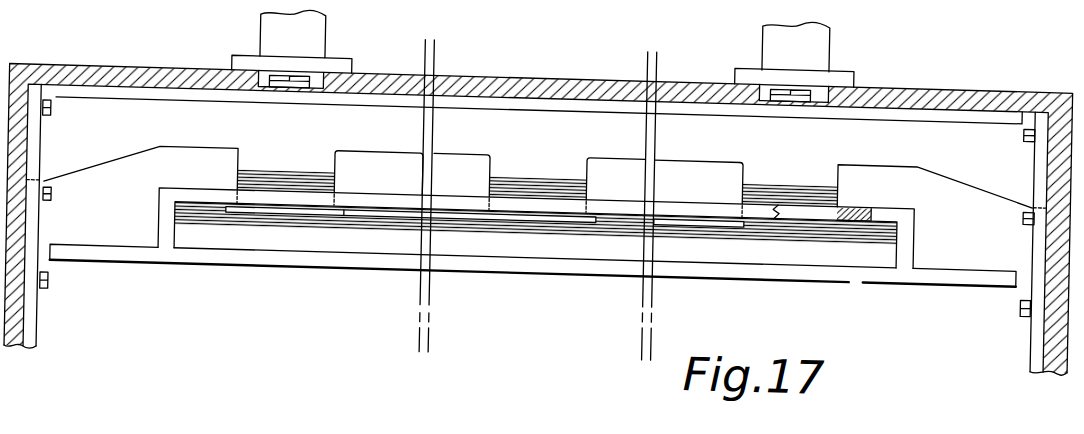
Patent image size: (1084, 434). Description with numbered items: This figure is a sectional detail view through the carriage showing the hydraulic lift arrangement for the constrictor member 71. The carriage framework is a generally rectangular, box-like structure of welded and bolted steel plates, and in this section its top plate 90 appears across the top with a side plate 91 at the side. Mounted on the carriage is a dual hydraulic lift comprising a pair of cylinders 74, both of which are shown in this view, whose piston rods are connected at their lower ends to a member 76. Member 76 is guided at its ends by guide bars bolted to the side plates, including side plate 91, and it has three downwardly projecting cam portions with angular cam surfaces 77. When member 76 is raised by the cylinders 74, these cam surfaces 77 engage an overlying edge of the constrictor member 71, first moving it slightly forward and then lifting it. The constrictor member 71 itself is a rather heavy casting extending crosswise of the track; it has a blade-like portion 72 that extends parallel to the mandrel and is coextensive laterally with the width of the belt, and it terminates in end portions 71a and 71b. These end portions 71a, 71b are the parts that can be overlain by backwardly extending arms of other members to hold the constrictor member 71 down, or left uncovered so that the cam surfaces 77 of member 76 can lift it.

The top plate 90 is at (504, 66).
The side plate 91 is at (1054, 315).
The cylinder 74 is at (311, 30).
The member 76 is at (218, 146).
The cam surface 77 is at (326, 180).
The constrictor member 71 is at (158, 195).
The end portion 71a is at (965, 245).
The end portion 71b is at (91, 246).
The blade-like portion 72 is at (515, 265).